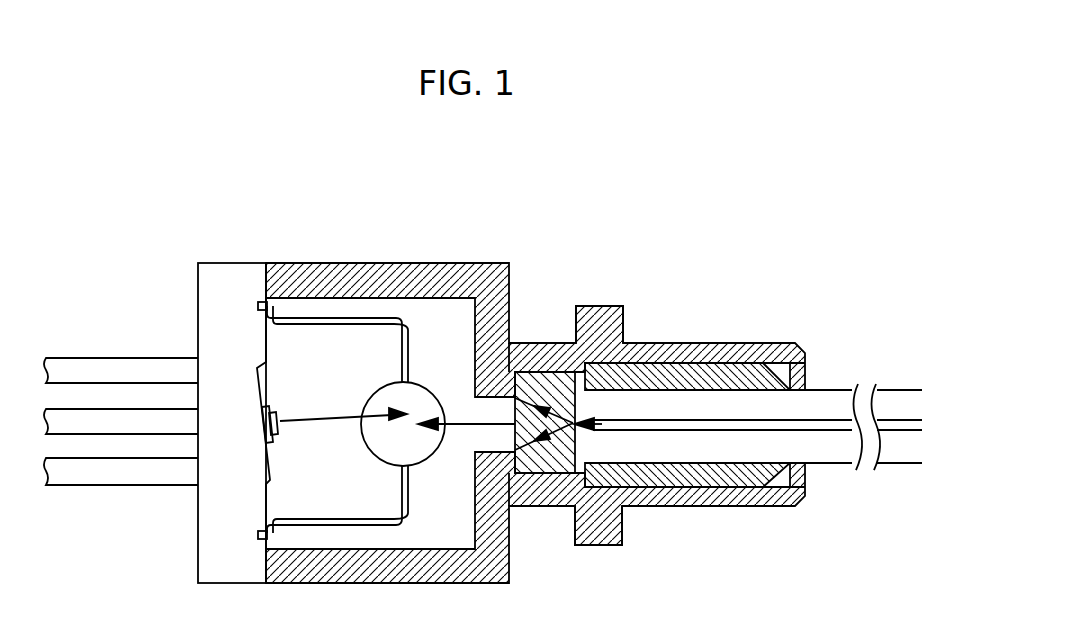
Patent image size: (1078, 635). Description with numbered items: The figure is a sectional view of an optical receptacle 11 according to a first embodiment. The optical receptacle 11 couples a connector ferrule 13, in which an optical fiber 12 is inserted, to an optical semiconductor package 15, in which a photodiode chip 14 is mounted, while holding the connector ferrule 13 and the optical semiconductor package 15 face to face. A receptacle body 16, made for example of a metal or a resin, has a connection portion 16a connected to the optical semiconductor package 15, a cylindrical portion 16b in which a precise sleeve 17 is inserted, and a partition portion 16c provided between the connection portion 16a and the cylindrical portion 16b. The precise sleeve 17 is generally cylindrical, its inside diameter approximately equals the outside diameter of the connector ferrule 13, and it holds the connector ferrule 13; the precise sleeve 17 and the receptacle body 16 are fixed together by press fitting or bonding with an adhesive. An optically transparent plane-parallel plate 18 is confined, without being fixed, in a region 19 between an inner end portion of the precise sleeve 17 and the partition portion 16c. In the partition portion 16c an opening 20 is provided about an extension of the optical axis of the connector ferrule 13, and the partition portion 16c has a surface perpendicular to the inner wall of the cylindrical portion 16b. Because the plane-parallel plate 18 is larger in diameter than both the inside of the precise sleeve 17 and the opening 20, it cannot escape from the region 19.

The optical receptacle 11 is at (716, 525).
The optical fiber 12 is at (823, 427).
The connector ferrule 13 is at (742, 403).
The photodiode chip 14 is at (282, 408).
The optical semiconductor package 15 is at (227, 332).
The receptacle body 16 is at (535, 369).
The connection portion 16a is at (445, 272).
The cylindrical portion 16b is at (708, 351).
The partition portion 16c is at (518, 343).
The precise sleeve 17 is at (706, 373).
The transparent plane-parallel plate 18 is at (560, 475).
The region 19 is at (598, 487).
The opening 20 is at (487, 443).